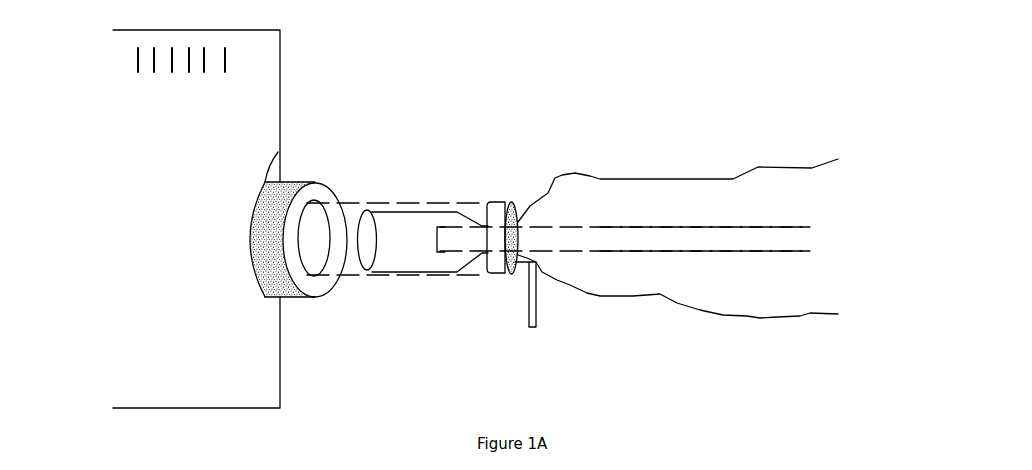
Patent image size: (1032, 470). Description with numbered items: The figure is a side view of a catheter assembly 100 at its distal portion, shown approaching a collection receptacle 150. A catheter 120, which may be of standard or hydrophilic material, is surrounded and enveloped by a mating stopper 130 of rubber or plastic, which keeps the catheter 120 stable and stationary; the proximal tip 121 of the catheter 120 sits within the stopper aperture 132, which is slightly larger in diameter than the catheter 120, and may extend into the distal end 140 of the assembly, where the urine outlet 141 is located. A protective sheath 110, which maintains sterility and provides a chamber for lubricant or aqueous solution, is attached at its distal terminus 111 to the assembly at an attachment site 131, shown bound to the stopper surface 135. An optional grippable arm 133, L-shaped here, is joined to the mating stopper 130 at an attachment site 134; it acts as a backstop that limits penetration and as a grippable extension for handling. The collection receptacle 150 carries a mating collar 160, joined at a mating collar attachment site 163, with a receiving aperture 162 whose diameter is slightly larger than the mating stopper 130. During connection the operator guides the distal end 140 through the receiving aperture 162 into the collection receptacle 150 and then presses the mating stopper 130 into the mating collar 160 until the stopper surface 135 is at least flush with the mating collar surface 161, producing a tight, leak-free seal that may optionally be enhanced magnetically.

The catheter assembly 100 is at (88, 189).
The protective sheath 110 is at (673, 178).
The distal terminus 111 is at (548, 192).
The catheter 120 is at (710, 238).
The proximal tip 121 is at (460, 240).
The mating stopper 130 is at (499, 218).
The attachment site 131 is at (516, 225).
The stopper aperture 132 is at (519, 236).
The optional grippable arm 133 is at (532, 317).
The attachment site 134 is at (512, 272).
The stopper surface 135 is at (512, 222).
The distal end 140 is at (407, 228).
The urine outlet 141 is at (375, 280).
The collection receptacle 150 is at (247, 110).
The mating collar 160 is at (284, 291).
The mating collar surface 161 is at (313, 283).
The receiving aperture 162 is at (312, 232).
The mating collar attachment site 163 is at (276, 157).